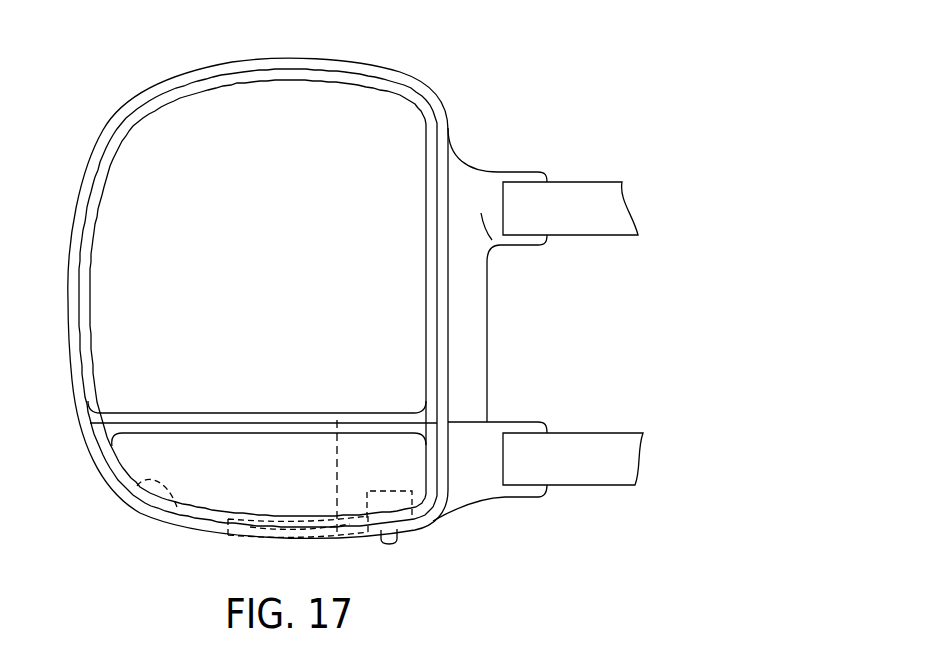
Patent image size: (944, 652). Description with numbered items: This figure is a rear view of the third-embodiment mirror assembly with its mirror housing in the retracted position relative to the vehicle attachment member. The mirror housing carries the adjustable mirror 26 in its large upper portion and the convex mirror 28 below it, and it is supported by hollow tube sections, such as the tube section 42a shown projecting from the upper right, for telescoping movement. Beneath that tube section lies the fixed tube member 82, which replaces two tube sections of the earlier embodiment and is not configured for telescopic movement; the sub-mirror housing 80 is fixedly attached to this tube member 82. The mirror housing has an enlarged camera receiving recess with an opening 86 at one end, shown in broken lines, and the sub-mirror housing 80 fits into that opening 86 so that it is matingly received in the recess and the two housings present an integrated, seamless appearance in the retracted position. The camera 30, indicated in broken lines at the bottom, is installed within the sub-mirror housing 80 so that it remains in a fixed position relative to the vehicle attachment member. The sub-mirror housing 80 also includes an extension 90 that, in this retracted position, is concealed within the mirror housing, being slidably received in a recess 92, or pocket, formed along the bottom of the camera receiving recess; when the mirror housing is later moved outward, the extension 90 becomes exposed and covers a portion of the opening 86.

The adjustable mirror 26 is at (147, 207).
The convex mirror 28 is at (133, 453).
The tube section 42a is at (592, 210).
The fixed tube member 82 is at (594, 453).
The sub-mirror housing 80 is at (432, 521).
The opening 86 is at (337, 462).
The extension 90 is at (290, 533).
The recess 92 is at (230, 536).
The camera 30 is at (385, 497).